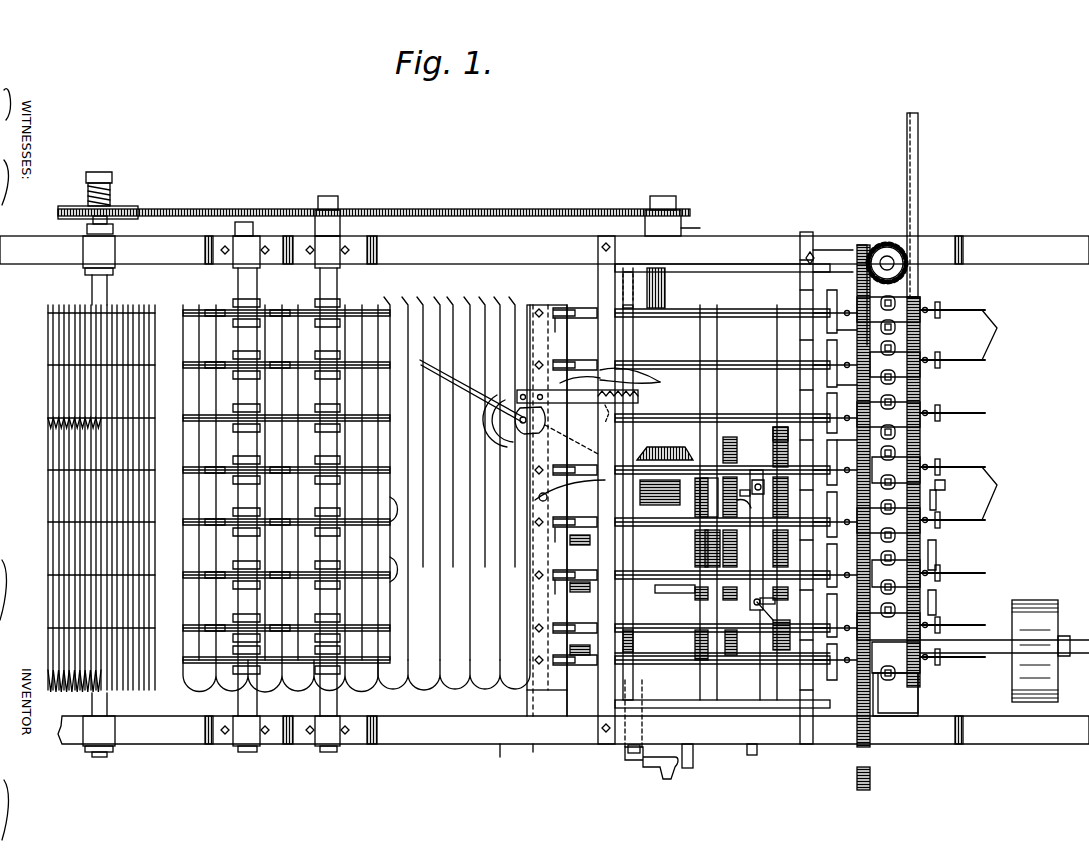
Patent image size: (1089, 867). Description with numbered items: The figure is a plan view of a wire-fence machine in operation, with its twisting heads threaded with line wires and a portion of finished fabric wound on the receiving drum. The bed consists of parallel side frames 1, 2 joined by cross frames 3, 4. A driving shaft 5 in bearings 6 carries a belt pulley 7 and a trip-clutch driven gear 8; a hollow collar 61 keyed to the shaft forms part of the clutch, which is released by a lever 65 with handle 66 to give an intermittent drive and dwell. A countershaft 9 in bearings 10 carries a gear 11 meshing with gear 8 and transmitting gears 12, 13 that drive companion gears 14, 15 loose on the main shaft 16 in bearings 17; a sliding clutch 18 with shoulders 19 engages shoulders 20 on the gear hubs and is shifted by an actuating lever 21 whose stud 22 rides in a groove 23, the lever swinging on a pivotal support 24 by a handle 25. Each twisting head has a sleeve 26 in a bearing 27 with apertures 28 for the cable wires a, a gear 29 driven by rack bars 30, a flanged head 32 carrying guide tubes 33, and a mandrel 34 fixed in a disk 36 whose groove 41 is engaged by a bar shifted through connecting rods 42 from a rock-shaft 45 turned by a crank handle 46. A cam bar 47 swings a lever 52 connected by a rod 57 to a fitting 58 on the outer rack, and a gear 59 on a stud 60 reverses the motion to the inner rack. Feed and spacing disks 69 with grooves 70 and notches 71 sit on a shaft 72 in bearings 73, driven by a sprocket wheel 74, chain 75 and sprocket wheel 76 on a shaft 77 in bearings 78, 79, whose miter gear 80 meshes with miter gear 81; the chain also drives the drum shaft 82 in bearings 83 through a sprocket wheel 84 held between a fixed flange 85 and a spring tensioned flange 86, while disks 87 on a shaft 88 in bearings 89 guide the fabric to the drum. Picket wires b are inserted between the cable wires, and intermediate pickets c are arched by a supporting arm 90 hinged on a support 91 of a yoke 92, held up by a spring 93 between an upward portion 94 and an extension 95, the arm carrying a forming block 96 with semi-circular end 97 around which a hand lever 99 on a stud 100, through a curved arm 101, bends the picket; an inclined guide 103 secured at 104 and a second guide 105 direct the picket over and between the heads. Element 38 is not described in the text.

The side frame 1 is at (400, 740).
The side frame 2 is at (760, 240).
The cross frame 3 is at (892, 702).
The cross frame 4 is at (558, 700).
The driving shaft 5 is at (1070, 656).
The bearing 6 is at (583, 665).
The belt pulley 7 is at (1055, 635).
The trip-clutch driven gear 8 is at (685, 680).
The countershaft 9 is at (650, 570).
The bearing 10 is at (580, 592).
The gear 11 is at (690, 594).
The transmitting gear 12 is at (704, 548).
The transmitting gear 13 is at (754, 605).
The companion gear 14 is at (733, 437).
The companion gear 15 is at (775, 430).
The main shaft 16 is at (660, 500).
The bearing 17 is at (581, 540).
The sliding clutch 18 is at (745, 478).
The shoulder 19 is at (752, 480).
The shoulder 20 is at (723, 501).
The actuating lever 21 is at (758, 690).
The stud 22 is at (758, 483).
The circumferential groove 23 is at (770, 432).
The pivotal support 24 is at (773, 611).
The handle 25 is at (757, 750).
The sleeve 26 is at (940, 308).
The bearing 27 is at (905, 360).
The peripheral aperture 28 is at (922, 372).
The gear 29 is at (912, 310).
The rack bar 30 is at (918, 205).
The flanged head 32 is at (832, 292).
The guide and spreading tube 33 is at (750, 362).
The twisting and ramming mandrel 34 is at (688, 363).
The disk 36 is at (798, 345).
The plate 38 is at (540, 305).
The circumferential groove 41 is at (798, 305).
The connecting rod 42 is at (718, 264).
The rock-shaft 45 is at (625, 752).
The crank handle 46 is at (660, 765).
The cam bar 47 is at (948, 485).
The lever 52 is at (940, 505).
The connecting rod 57 is at (938, 550).
The fitting 58 is at (932, 610).
The gear 59 is at (868, 242).
The stud 60 is at (888, 255).
The hollow collar 61 is at (745, 678).
The lever 65 is at (690, 692).
The handle 66 is at (693, 756).
The feed and spacing disk 69 is at (352, 519).
The circumferential groove 70 is at (390, 548).
The peripheral notch 71 is at (340, 310).
The shaft 72 is at (320, 280).
The bearing 73 is at (314, 246).
The sprocket wheel 74 is at (316, 208).
The sprocket chain 75 is at (448, 209).
The sprocket wheel 76 is at (652, 206).
The shaft 77 is at (666, 292).
The bearing 78 is at (695, 222).
The bearing 79 is at (618, 357).
The miter gear 80 is at (672, 447).
The miter gear 81 is at (703, 447).
The shaft 82 is at (92, 282).
The bearing 83 is at (110, 270).
The sprocket wheel 84 is at (58, 212).
The fixed flange 85 is at (87, 229).
The spring tensioned flange 86 is at (88, 200).
The disk 87 is at (222, 312).
The shaft 88 is at (238, 706).
The bearing 89 is at (232, 244).
The supporting arm 90 is at (572, 385).
The support 91 is at (630, 369).
The yoke 92 is at (598, 286).
The coiled spring 93 is at (610, 412).
The upwardly extending portion 94 is at (577, 397).
The extension 95 is at (660, 382).
The forming block 96 is at (532, 412).
The semi-circular end 97 is at (538, 432).
The hand lever 99 is at (455, 405).
The stud 100 is at (507, 430).
The curved arm 101 is at (510, 446).
The inclined guide 103 is at (550, 489).
The securing point 104 is at (530, 496).
The inclined guide 105 is at (590, 430).
The cable wire a is at (996, 415).
The picket wire b is at (500, 305).
The intermediate picket c is at (450, 305).